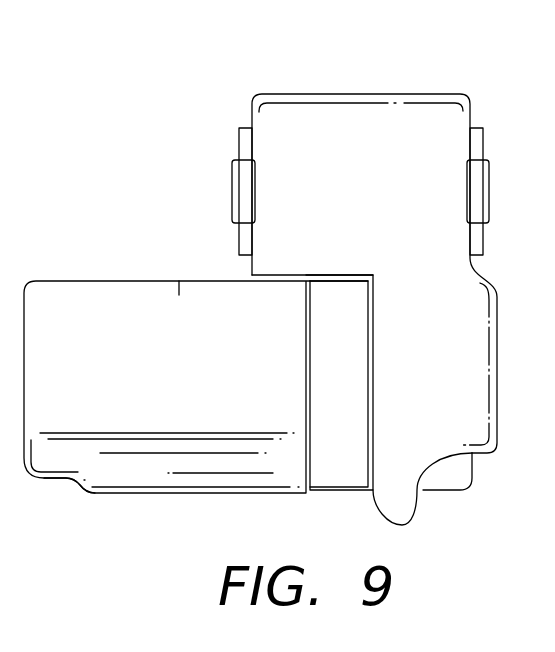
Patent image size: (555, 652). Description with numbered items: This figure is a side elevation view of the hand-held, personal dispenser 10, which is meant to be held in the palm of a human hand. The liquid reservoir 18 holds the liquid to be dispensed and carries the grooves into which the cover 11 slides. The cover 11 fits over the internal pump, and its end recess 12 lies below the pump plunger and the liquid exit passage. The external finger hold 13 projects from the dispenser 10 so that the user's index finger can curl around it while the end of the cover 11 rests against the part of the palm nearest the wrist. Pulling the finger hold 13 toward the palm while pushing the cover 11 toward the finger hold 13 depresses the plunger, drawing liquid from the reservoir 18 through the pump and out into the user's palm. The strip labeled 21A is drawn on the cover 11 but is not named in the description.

The dispenser 10 is at (149, 174).
The cover 11 is at (74, 281).
The end recess 12 is at (68, 489).
The finger hold 13 is at (405, 525).
The liquid reservoir 18 is at (349, 115).
The contact strip 21A is at (338, 276).